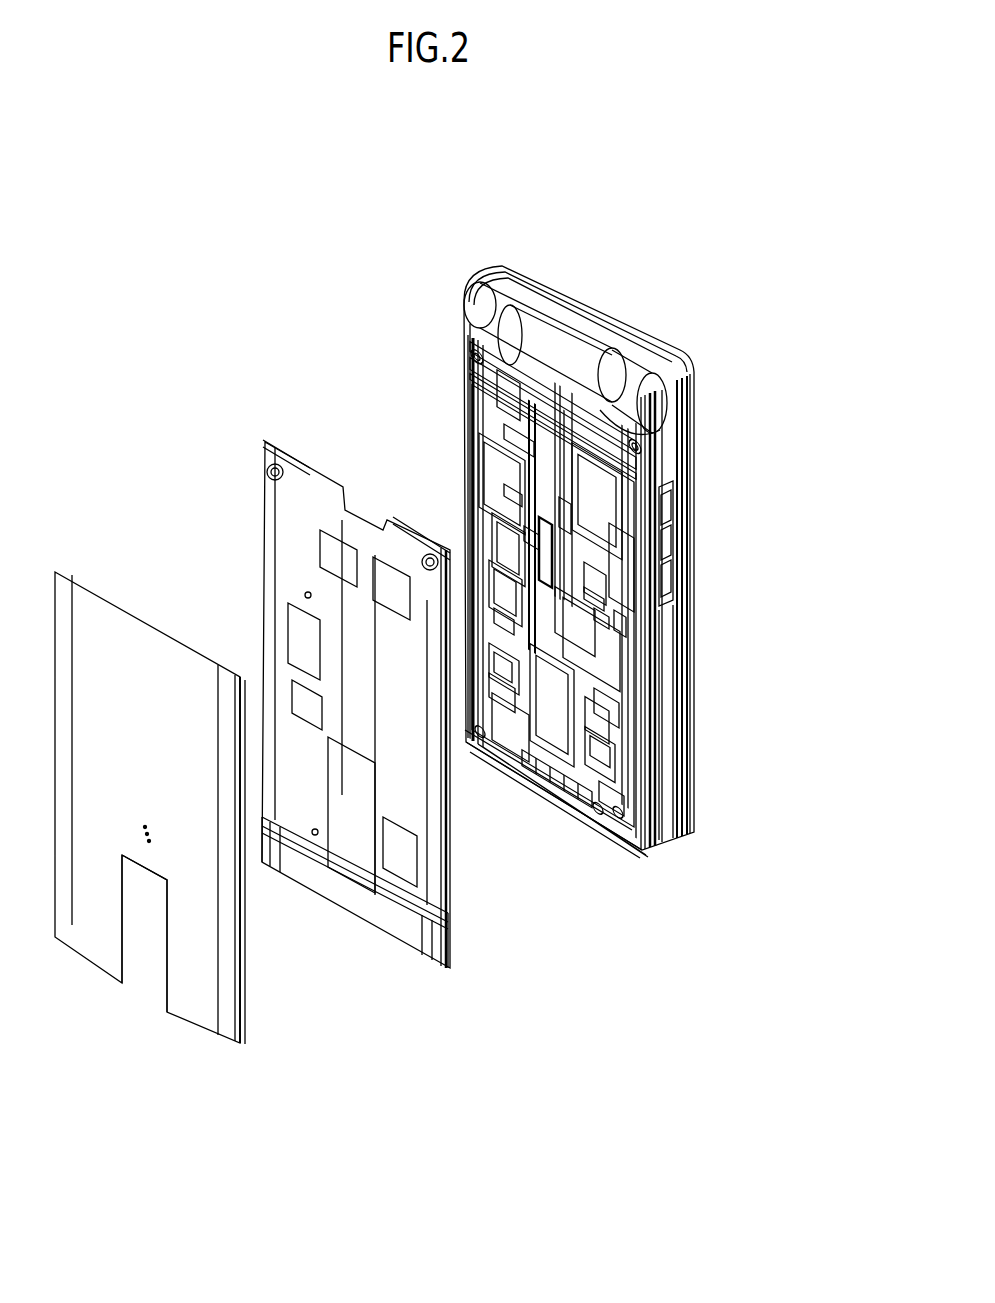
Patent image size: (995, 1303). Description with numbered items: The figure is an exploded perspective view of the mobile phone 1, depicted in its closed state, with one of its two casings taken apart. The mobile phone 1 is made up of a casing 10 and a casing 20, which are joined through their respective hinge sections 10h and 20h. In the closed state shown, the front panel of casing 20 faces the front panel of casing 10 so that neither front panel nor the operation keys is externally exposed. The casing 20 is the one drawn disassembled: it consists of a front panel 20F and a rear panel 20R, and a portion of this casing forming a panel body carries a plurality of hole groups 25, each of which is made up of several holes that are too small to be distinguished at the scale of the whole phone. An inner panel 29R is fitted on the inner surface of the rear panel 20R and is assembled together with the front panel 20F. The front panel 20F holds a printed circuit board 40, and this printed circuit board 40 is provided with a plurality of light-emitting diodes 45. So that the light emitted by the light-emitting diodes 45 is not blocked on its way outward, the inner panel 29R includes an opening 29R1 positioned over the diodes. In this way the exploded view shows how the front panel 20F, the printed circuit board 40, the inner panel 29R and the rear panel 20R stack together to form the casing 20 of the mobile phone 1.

The mobile phone 1 is at (708, 258).
The casing 10 is at (688, 831).
The hinge section 10h is at (556, 348).
The casing 20 is at (636, 851).
The hinge section 20h is at (637, 377).
The front panel 20F is at (648, 855).
The rear panel 20R is at (243, 1048).
The hole groups 25 is at (140, 845).
The inner panel 29R is at (452, 978).
The opening 29R1 is at (357, 660).
The printed circuit board 40 is at (590, 645).
The light-emitting diodes 45 is at (627, 683).